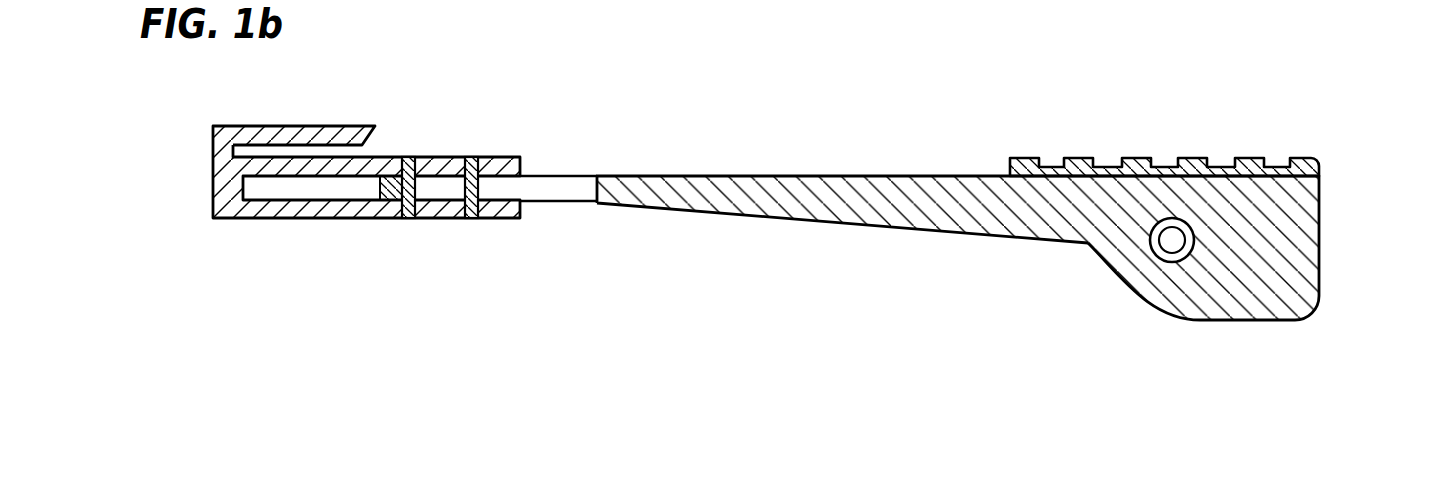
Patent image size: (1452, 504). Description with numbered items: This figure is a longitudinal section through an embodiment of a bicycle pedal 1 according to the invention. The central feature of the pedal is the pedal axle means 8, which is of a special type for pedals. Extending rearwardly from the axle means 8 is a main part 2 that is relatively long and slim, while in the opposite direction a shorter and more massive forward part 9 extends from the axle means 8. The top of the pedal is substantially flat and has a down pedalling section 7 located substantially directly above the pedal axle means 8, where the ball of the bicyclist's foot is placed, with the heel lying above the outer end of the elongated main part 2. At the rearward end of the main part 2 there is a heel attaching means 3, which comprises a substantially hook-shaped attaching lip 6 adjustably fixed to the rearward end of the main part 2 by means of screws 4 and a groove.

The bicycle pedal 1 is at (927, 240).
The main part 2 is at (770, 217).
The heel attaching means 3 is at (362, 218).
The screws 4 is at (473, 157).
The attaching lip 6 is at (300, 126).
The down pedalling section 7 is at (1171, 160).
The pedal axle means 8 is at (1157, 262).
The forward part 9 is at (1228, 278).